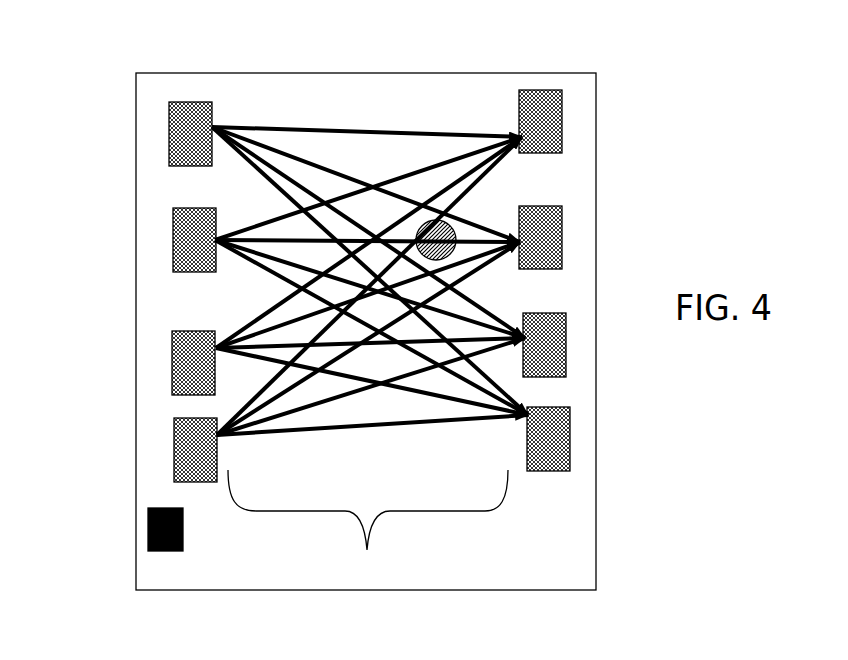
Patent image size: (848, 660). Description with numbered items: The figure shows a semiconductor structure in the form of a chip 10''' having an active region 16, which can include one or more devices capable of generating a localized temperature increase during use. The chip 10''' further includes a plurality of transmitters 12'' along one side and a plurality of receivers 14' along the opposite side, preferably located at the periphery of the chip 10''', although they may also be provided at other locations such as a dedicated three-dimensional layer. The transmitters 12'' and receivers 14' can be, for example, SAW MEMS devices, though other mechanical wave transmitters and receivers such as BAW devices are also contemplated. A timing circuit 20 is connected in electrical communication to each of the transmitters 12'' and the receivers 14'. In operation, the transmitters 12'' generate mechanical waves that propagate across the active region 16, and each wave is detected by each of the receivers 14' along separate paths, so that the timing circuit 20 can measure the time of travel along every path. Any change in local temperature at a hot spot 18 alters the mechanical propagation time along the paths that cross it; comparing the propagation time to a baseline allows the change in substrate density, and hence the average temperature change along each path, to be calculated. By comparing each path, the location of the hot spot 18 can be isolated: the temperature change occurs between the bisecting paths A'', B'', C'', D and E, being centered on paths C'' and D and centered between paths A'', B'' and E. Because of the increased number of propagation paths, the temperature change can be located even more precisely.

The chip 10''' is at (326, 319).
The transmitters 12'' is at (147, 255).
The receivers 14' is at (578, 280).
The active region 16 is at (370, 357).
The hot spot 18 is at (420, 223).
The timing circuit 20 is at (148, 540).
The path A'' is at (411, 148).
The path B'' is at (492, 291).
The path C'' is at (480, 210).
The path D is at (448, 198).
The path E is at (412, 200).